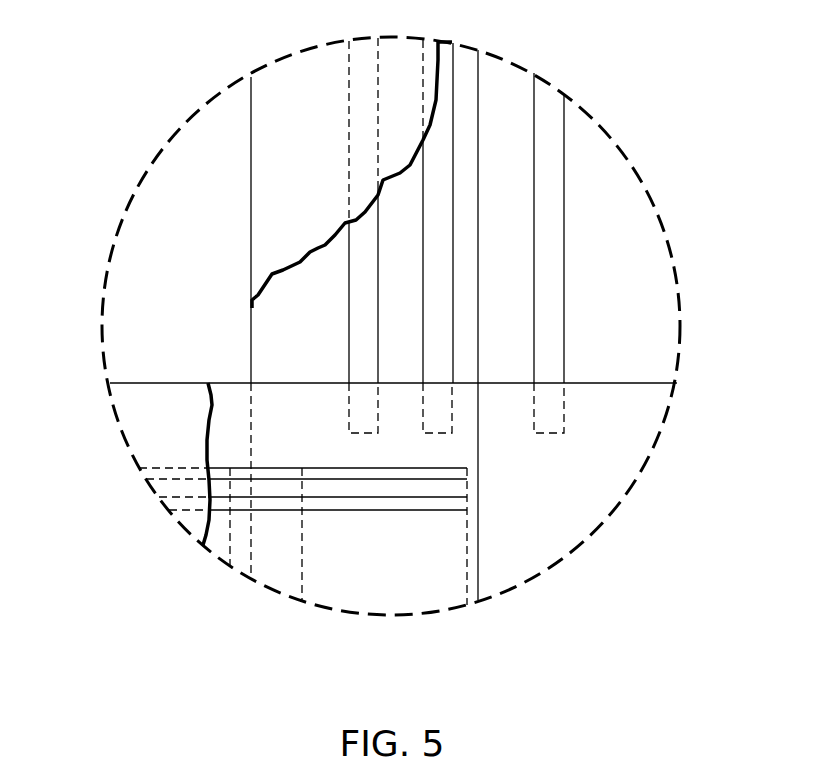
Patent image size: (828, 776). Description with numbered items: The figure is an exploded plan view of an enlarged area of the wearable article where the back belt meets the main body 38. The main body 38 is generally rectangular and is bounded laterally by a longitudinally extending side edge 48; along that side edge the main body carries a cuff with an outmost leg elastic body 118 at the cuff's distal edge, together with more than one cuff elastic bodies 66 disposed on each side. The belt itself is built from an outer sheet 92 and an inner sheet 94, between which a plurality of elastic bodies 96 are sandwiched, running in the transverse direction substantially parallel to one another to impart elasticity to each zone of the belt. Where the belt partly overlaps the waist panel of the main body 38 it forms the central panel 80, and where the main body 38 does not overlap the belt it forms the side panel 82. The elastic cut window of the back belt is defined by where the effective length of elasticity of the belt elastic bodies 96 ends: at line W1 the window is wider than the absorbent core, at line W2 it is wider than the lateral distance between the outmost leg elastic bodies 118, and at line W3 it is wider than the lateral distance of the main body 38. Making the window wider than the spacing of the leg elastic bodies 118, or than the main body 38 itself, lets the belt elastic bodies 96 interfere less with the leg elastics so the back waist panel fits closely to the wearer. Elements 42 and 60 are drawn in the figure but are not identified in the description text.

The main body 38 is at (593, 67).
The first layer 42 is at (283, 58).
The side edge 48 is at (250, 195).
The second layer 60 is at (498, 72).
The cuff elastic bodies 66 is at (437, 428).
The central panel 80 is at (591, 591).
The side panel 82 is at (171, 599).
The outer sheet 92 is at (130, 431).
The inner sheet 94 is at (272, 592).
The elastic bodies 96 is at (397, 505).
The outmost leg elastic body 118 is at (358, 330).
The line W1 is at (464, 576).
The line W2 is at (306, 573).
The line W3 is at (227, 541).